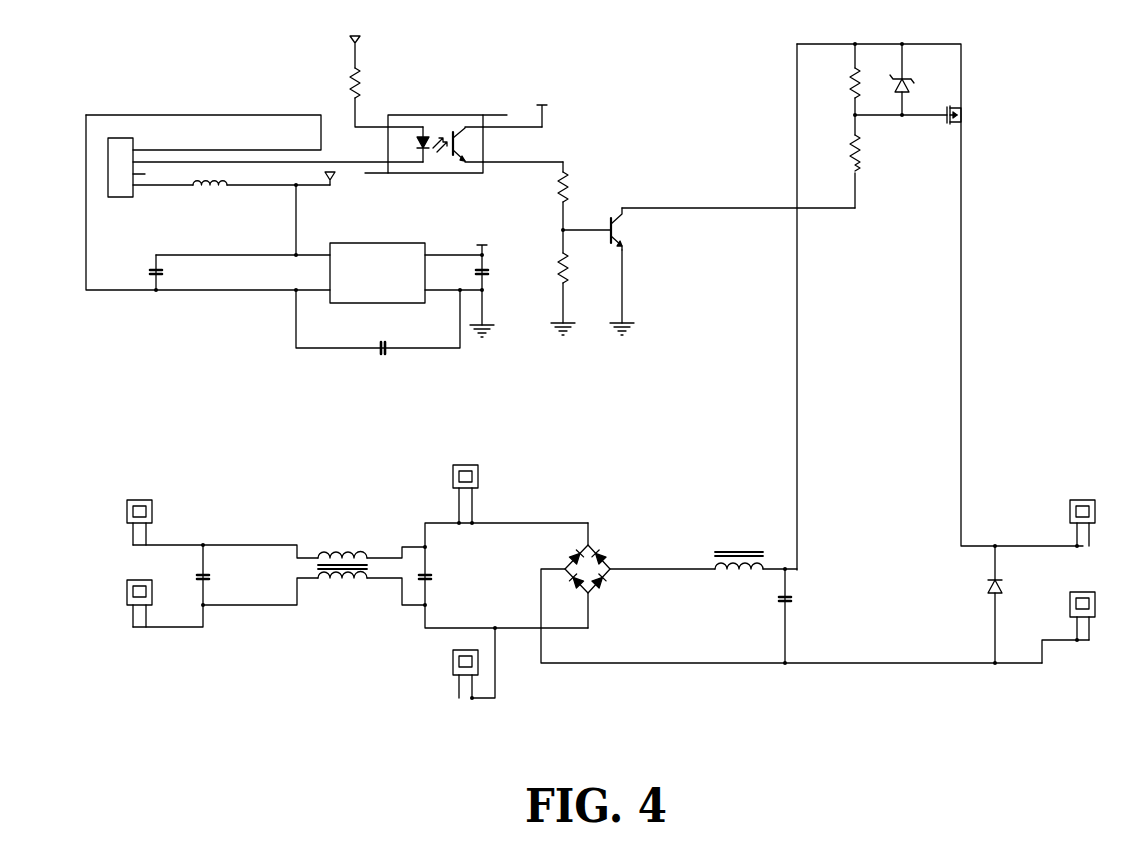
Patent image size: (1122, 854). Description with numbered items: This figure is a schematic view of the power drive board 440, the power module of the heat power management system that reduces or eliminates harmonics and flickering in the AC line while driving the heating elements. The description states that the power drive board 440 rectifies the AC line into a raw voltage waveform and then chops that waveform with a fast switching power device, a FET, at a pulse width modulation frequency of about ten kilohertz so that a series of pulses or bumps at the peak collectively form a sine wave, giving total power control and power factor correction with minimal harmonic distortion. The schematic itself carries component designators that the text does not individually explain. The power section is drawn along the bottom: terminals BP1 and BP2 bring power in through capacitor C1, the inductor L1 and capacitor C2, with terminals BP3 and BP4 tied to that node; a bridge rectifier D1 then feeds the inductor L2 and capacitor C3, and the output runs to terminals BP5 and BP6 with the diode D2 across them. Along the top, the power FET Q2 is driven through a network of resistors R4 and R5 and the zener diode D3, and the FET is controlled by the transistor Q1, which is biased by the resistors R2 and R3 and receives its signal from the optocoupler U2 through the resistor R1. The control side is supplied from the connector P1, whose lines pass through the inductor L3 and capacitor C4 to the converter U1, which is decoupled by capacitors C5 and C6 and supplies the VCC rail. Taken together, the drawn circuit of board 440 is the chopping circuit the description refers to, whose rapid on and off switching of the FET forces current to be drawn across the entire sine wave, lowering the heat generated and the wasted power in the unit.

The power drive board 440 is at (1117, 57).
The connector P1 is at (120, 174).
The iron inductor L1 is at (350, 575).
The inductor L2 is at (738, 568).
The small inductor L3 is at (235, 190).
The capacitor C1 is at (241, 582).
The capacitor C2 is at (463, 582).
The capacitor C3 is at (840, 603).
The capacitor C4 is at (181, 278).
The capacitor C5 is at (508, 277).
The capacitor C6 is at (407, 349).
The resistor R1 is at (334, 85).
The resistor R2 is at (543, 190).
The resistor R3 is at (578, 272).
The resistor R4 is at (832, 86).
The resistor R5 is at (839, 151).
The bridge diode D1 is at (642, 563).
The diode D2 is at (1002, 600).
The zener diode D3 is at (896, 90).
The transistor Q1 is at (641, 231).
The MOSFET Q2 is at (986, 113).
The DC-DC converter U1 is at (378, 264).
The optocoupler U2 is at (436, 144).
The terminal BP1 is at (146, 525).
The terminal BP2 is at (146, 605).
The terminal BP3 is at (485, 487).
The terminal BP4 is at (474, 676).
The terminal BP5 is at (1090, 525).
The terminal BP6 is at (1090, 617).